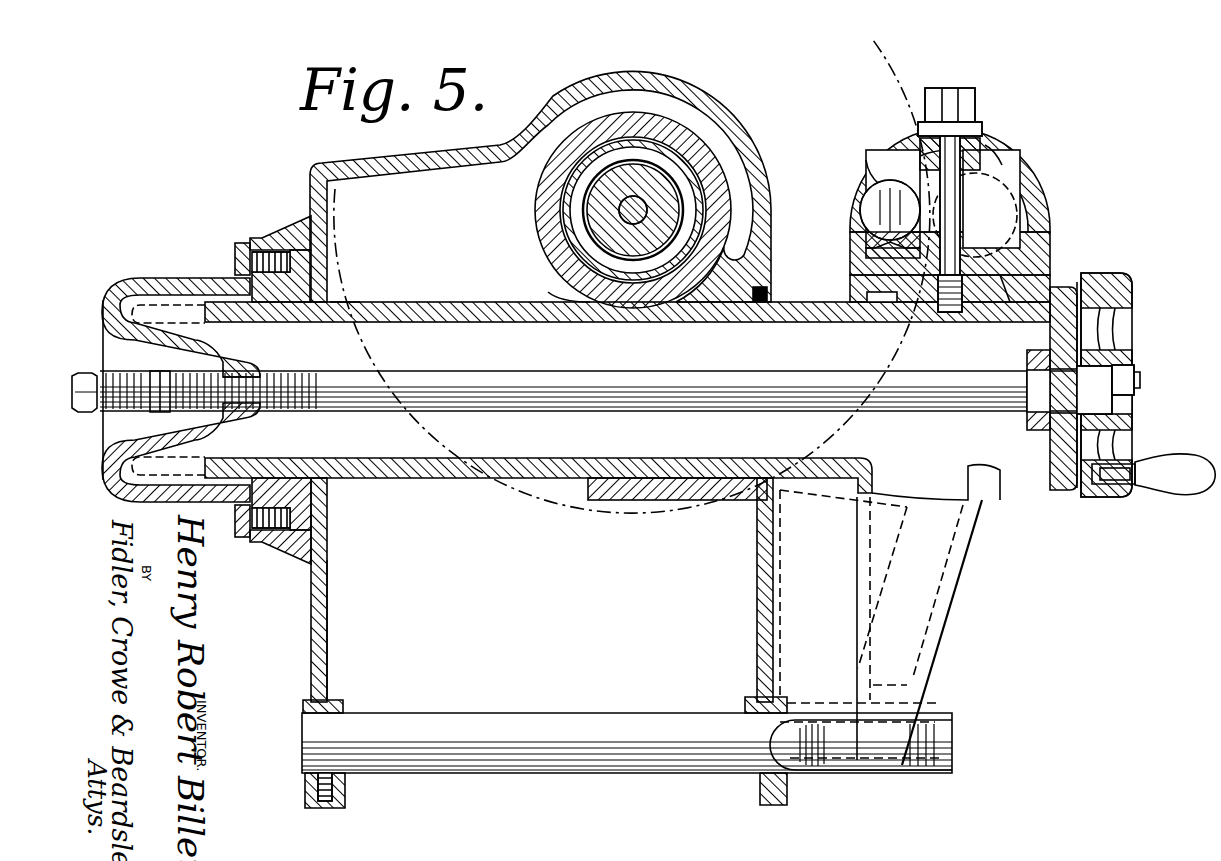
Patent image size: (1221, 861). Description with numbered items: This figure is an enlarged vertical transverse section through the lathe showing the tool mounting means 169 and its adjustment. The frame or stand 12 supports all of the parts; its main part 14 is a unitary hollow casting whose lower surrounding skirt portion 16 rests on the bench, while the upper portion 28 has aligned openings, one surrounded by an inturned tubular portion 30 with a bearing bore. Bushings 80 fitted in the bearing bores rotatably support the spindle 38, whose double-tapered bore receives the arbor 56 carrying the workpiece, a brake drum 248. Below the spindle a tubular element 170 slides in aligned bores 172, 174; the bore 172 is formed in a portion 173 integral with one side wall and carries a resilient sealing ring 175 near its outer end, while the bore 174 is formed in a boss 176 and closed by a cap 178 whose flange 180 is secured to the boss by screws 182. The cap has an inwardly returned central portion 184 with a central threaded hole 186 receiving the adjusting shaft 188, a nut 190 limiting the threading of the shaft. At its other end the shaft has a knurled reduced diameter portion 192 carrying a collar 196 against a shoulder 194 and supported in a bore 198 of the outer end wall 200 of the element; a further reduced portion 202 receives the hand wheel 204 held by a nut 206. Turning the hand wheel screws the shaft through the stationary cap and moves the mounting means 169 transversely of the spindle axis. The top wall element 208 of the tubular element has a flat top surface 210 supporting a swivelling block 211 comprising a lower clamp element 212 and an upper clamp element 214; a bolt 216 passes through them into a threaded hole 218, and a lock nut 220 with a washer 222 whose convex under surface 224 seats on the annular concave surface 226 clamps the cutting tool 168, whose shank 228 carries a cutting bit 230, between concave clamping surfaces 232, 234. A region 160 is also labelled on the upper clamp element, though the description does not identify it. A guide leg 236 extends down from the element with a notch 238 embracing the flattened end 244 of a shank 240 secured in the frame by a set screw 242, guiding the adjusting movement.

The frame or stand 12 is at (312, 168).
The main part 14 is at (310, 602).
The lower surrounding skirt portion 16 is at (312, 645).
The portion 28 is at (516, 178).
The inturned tubular portion 30 is at (548, 188).
The spindle 38 is at (590, 228).
The arbor 56 is at (620, 222).
The bushings 80 is at (566, 212).
The valve chamber 160 is at (1030, 163).
The cutting tool 168 is at (858, 208).
The mounting means 169 is at (1055, 533).
The tubular element 170 is at (430, 479).
The bore 172 is at (575, 300).
The portion 173 is at (640, 500).
The bore 174 is at (350, 302).
The resilient sealing ring 175 is at (770, 296).
The boss 176 is at (296, 232).
The cap 178 is at (178, 278).
The flange 180 is at (243, 243).
The screws 182 is at (238, 262).
The central portion 184 is at (103, 348).
The central threaded hole 186 is at (250, 378).
The adjusting shaft 188 is at (420, 375).
The nut 190 is at (160, 414).
The reduced diameter portion 192 is at (1063, 400).
The shoulder 194 is at (1030, 411).
The collar 196 is at (1027, 352).
The bore 198 is at (1060, 360).
The outer end wall 200 is at (1121, 395).
The further reduced portion 202 is at (1097, 377).
The hand wheel 204 is at (1130, 290).
The nut 206 is at (1137, 370).
The top wall element 208 is at (1007, 285).
The top surface 210 is at (887, 303).
The swivelling block 211 is at (975, 195).
The lower clamp element 212 is at (1052, 250).
The upper clamp element 214 is at (1042, 186).
The bolt 216 is at (958, 93).
The threaded hole 218 is at (947, 303).
The lock nut 220 is at (976, 105).
The washer 222 is at (982, 128).
The convex under surface 224 is at (1015, 148).
The annular concave surface 226 is at (995, 138).
The shank 228 is at (860, 248).
The cutting bit 230 is at (1040, 207).
The concave clamping surface 232 is at (880, 244).
The concave clamping surface 234 is at (856, 170).
The guide leg 236 is at (953, 604).
The notch 238 is at (937, 707).
The shank 240 is at (620, 757).
The set screw 242 is at (330, 800).
The flattened portion 244 is at (937, 747).
The brake drum 248 is at (892, 47).